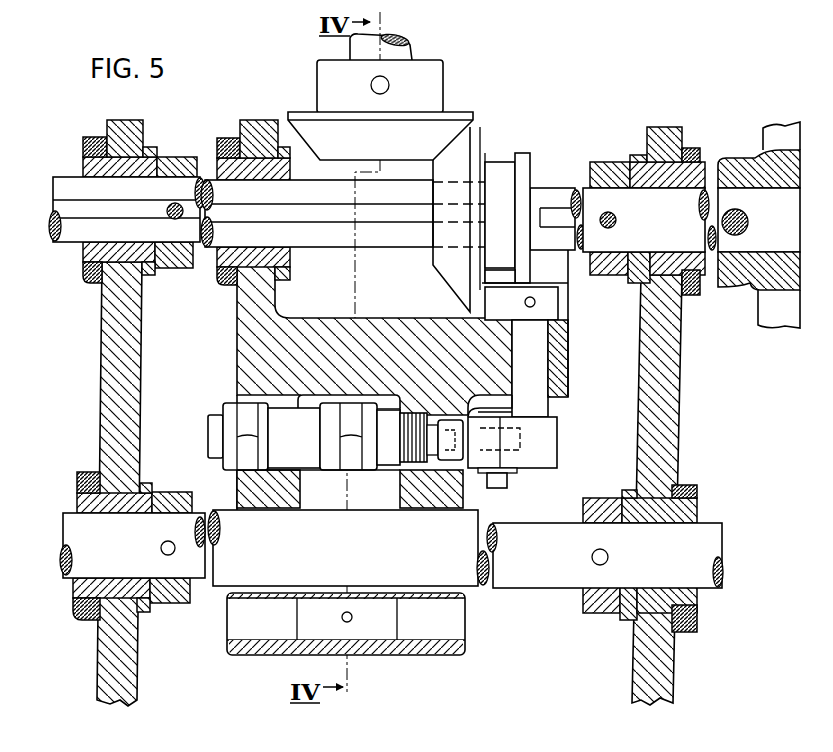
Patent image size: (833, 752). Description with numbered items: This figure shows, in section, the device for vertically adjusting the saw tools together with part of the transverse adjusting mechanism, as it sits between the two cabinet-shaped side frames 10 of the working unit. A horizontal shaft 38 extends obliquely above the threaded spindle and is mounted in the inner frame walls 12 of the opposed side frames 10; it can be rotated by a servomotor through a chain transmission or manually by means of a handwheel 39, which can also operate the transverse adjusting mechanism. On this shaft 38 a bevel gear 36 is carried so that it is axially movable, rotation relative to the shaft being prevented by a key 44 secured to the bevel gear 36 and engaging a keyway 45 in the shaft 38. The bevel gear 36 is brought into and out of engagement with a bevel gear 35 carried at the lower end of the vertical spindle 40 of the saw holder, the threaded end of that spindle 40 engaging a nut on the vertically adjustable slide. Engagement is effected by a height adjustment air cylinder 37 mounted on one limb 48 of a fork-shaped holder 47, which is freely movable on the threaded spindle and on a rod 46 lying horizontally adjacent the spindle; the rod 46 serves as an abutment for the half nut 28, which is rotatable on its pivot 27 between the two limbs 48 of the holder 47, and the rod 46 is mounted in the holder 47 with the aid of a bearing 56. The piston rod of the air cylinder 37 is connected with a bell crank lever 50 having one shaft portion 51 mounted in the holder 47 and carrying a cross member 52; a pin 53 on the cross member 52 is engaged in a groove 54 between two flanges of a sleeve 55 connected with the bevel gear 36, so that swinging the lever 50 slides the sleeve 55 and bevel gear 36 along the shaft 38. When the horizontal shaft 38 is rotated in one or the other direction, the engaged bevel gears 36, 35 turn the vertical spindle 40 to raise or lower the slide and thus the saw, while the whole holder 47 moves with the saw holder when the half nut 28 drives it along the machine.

The side frame 10 is at (95, 655).
The inner frame wall 12 is at (120, 119).
The pivot 27 is at (465, 622).
The half nut 28 is at (371, 646).
The bevel gear 35 is at (462, 148).
The bevel gear 36 is at (455, 118).
The air cylinder 37 is at (335, 432).
The shaft 38 is at (378, 237).
The handwheel 39 is at (766, 134).
The vertical spindle 40 is at (412, 50).
The key 44 is at (535, 218).
The keyway 45 is at (410, 215).
The rod 46 is at (545, 573).
The fork-shaped holder 47 is at (247, 376).
The limb 48 is at (410, 495).
The bell crank lever 50 is at (545, 430).
The shaft portion 51 is at (535, 345).
The cross member 52 is at (556, 301).
The pin 53 is at (498, 278).
The groove 54 is at (500, 163).
The sleeve 55 is at (533, 160).
The bearing 56 is at (222, 170).